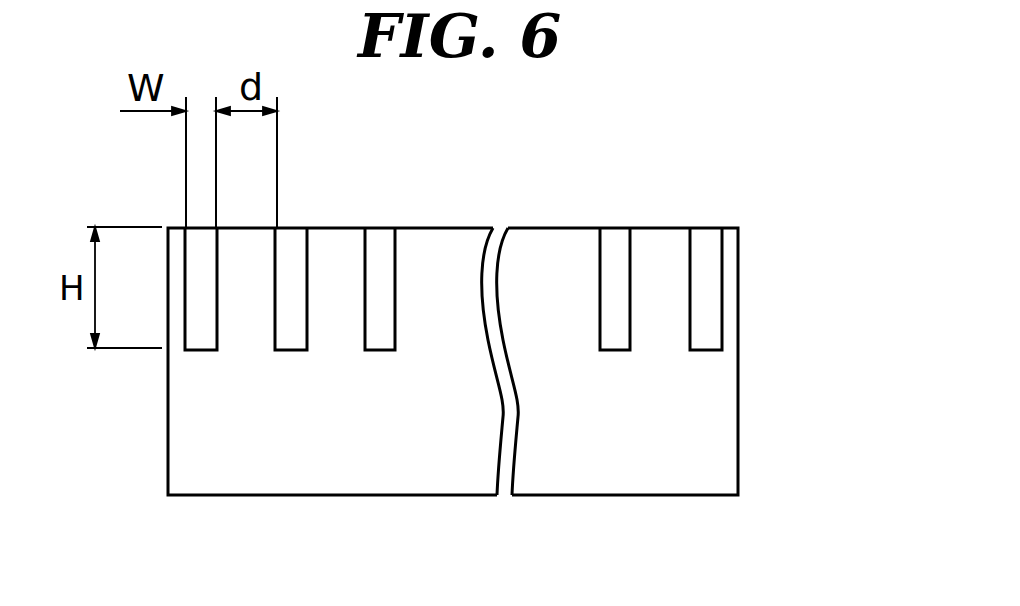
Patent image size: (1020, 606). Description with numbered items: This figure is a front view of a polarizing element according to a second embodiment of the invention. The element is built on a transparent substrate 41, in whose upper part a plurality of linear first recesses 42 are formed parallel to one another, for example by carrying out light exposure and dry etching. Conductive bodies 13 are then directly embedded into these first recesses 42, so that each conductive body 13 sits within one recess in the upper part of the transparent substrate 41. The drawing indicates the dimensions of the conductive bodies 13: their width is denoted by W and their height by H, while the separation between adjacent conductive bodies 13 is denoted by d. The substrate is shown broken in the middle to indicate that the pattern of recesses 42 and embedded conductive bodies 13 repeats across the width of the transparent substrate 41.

The conductive body 13 is at (613, 245).
The transparent substrate 41 is at (428, 480).
The first recess 42 is at (612, 347).